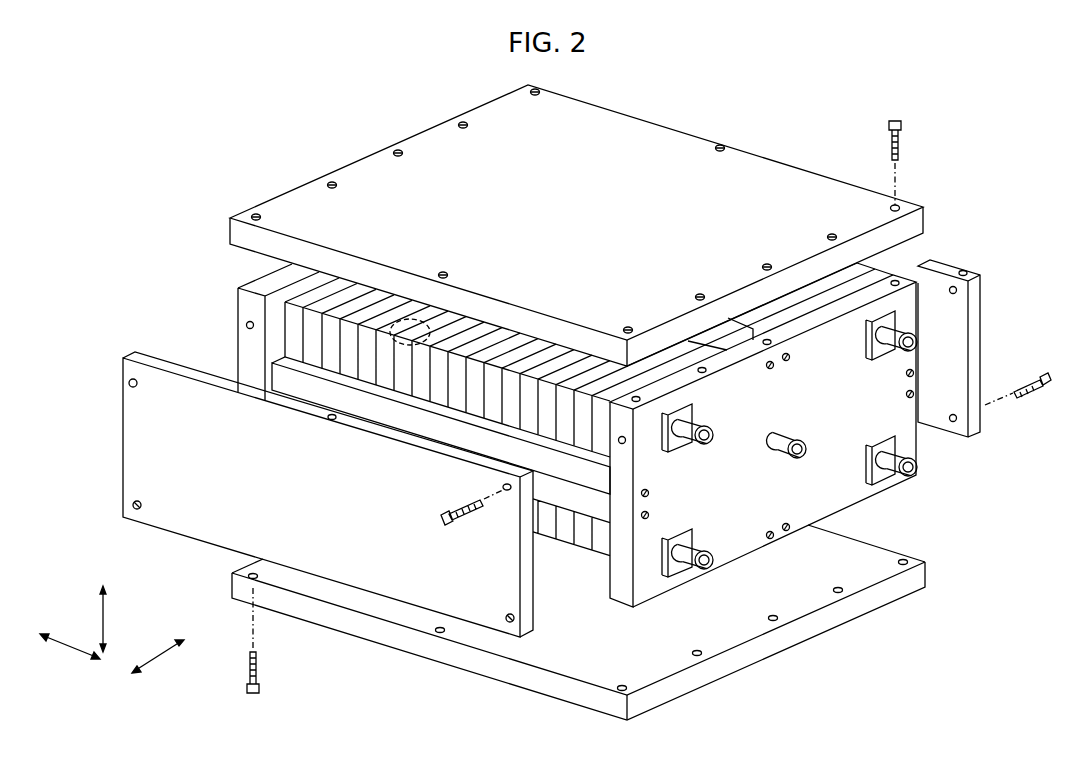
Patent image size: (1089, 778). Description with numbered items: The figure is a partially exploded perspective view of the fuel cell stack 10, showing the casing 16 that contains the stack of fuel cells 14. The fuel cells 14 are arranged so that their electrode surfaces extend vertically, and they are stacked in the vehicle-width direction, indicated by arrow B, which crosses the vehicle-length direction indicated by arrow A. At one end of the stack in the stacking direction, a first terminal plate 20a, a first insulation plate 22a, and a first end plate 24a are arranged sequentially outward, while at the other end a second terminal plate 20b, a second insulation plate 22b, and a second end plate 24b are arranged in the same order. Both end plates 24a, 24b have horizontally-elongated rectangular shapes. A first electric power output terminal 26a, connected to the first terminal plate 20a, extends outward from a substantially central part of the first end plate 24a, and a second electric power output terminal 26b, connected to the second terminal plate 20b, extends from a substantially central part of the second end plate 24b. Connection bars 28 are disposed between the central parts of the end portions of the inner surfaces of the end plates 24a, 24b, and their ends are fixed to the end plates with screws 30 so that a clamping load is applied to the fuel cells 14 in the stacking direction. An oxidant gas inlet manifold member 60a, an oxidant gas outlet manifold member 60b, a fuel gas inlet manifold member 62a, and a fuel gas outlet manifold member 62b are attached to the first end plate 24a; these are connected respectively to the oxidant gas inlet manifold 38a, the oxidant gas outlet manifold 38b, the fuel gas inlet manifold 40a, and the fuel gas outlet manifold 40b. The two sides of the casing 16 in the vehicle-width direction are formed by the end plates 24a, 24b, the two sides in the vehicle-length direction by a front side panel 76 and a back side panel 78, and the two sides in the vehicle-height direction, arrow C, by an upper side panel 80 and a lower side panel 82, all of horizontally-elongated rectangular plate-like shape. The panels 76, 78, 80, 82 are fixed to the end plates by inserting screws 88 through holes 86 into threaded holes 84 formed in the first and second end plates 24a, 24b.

The fuel cell stack 10 is at (434, 93).
The casing 16 is at (360, 147).
The fuel cells 14 is at (415, 385).
The first terminal plate 20a is at (588, 404).
The second terminal plate 20b is at (312, 358).
The first insulation plate 22a is at (603, 404).
The second insulation plate 22b is at (293, 358).
The first end plate 24a is at (920, 322).
The second end plate 24b is at (237, 289).
The first electric power output terminal 26a is at (788, 457).
The second electric power output terminal 26b is at (408, 318).
The connection bars 28 is at (727, 333).
The screws 30 is at (773, 368).
The oxidant gas inlet manifold 38a is at (912, 344).
The oxidant gas outlet manifold 38b is at (700, 560).
The fuel gas inlet manifold 40a is at (912, 472).
The fuel gas outlet manifold 40b is at (702, 422).
The oxidant gas inlet manifold member 60a is at (977, 335).
The oxidant gas outlet manifold member 60b is at (715, 579).
The fuel gas inlet manifold member 62a is at (936, 472).
The fuel gas outlet manifold member 62b is at (737, 425).
The front side panel 76 is at (182, 392).
The back side panel 78 is at (975, 318).
The upper side panel 80 is at (782, 186).
The lower side panel 82 is at (874, 598).
The threaded holes 84 is at (898, 281).
The holes 86 is at (899, 207).
The screws 88 is at (903, 142).